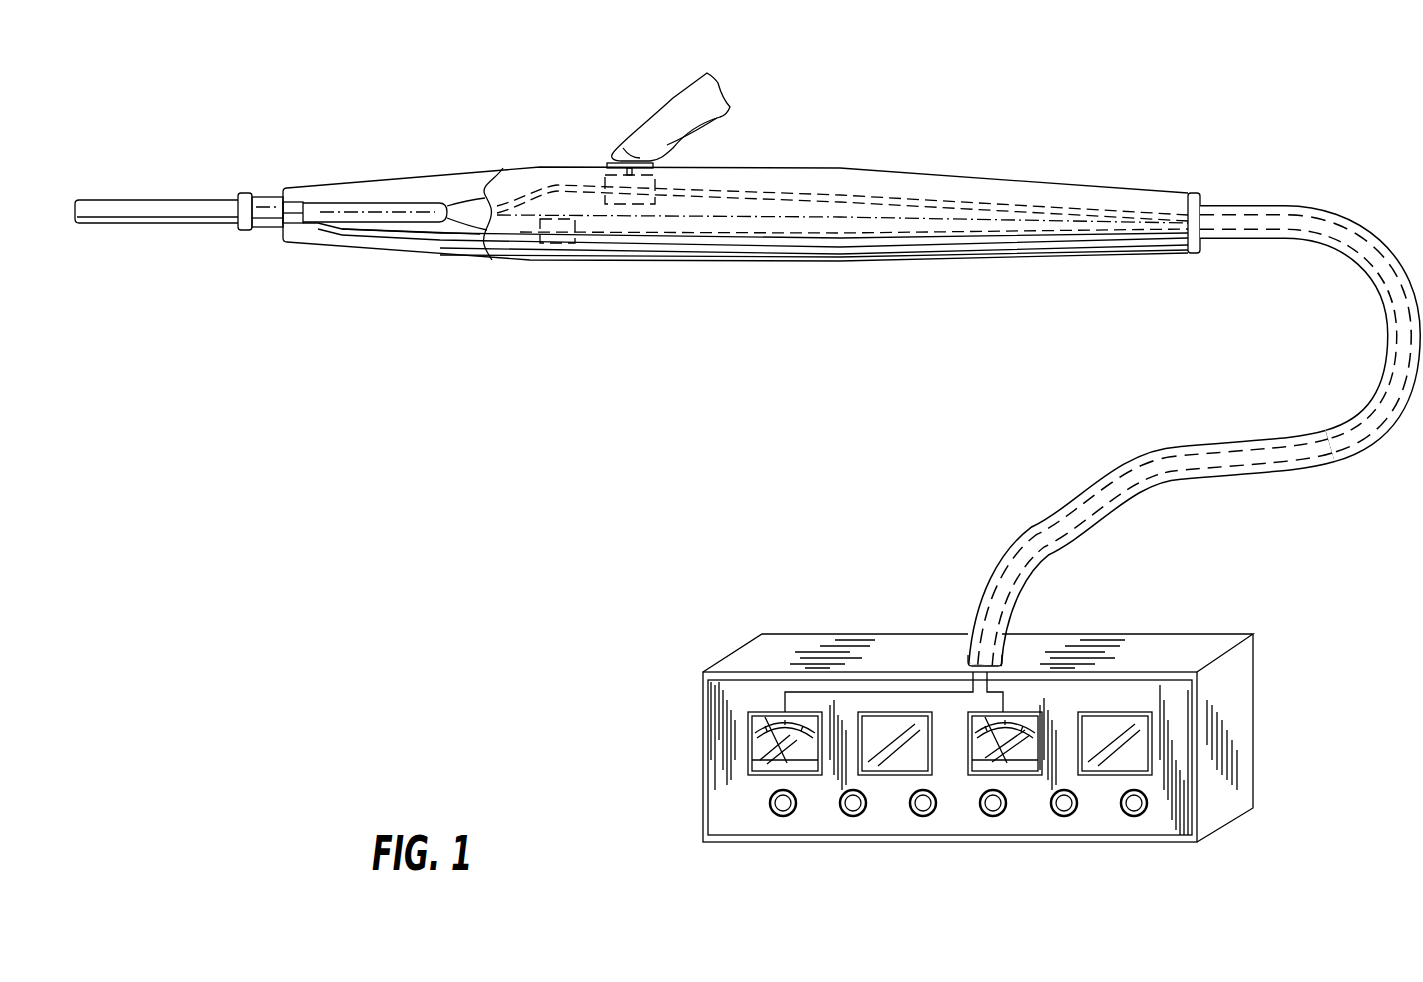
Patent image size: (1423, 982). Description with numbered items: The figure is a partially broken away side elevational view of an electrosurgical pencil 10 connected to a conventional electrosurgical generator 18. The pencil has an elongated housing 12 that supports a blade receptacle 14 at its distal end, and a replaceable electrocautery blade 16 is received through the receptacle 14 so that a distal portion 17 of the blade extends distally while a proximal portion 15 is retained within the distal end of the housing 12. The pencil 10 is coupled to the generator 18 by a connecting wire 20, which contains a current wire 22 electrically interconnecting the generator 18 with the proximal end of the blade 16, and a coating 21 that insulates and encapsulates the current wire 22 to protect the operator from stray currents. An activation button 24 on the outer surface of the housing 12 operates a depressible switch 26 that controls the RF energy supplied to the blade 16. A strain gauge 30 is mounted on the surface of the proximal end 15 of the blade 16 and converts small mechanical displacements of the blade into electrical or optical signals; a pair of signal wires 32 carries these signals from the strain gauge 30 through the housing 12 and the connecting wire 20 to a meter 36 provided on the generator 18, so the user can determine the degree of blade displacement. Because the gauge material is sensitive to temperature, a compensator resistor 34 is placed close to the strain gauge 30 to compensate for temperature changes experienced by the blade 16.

The electrosurgical pencil 10 is at (462, 100).
The elongated housing 12 is at (770, 168).
The blade receptacle 14 is at (282, 192).
The proximal portion of blade 15 is at (388, 203).
The electrocautery blade 16 is at (185, 200).
The distal portion of blade 17 is at (92, 208).
The electrosurgical generator 18 is at (808, 635).
The connecting wire 20 is at (1220, 206).
The coating 21 is at (1205, 482).
The current wire 22 is at (1012, 207).
The activation button 24 is at (603, 163).
The depressible switch 26 is at (657, 168).
The strain gauge 30 is at (318, 226).
The signal wires 32 is at (360, 237).
The compensator resistor 34 is at (557, 243).
The meter 36 is at (748, 754).